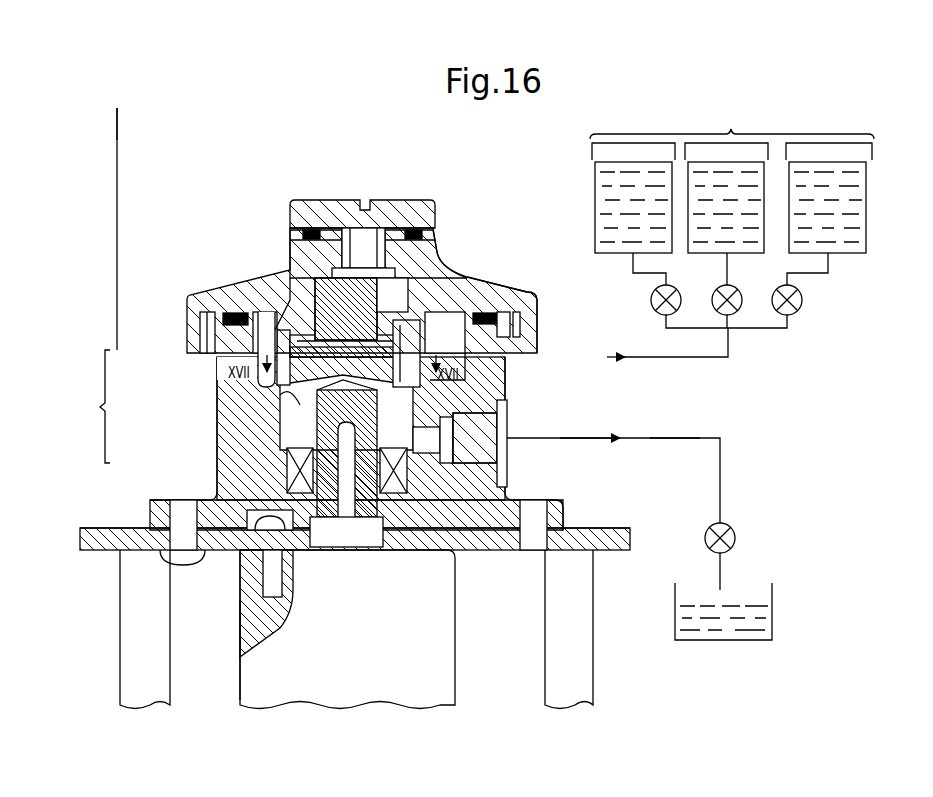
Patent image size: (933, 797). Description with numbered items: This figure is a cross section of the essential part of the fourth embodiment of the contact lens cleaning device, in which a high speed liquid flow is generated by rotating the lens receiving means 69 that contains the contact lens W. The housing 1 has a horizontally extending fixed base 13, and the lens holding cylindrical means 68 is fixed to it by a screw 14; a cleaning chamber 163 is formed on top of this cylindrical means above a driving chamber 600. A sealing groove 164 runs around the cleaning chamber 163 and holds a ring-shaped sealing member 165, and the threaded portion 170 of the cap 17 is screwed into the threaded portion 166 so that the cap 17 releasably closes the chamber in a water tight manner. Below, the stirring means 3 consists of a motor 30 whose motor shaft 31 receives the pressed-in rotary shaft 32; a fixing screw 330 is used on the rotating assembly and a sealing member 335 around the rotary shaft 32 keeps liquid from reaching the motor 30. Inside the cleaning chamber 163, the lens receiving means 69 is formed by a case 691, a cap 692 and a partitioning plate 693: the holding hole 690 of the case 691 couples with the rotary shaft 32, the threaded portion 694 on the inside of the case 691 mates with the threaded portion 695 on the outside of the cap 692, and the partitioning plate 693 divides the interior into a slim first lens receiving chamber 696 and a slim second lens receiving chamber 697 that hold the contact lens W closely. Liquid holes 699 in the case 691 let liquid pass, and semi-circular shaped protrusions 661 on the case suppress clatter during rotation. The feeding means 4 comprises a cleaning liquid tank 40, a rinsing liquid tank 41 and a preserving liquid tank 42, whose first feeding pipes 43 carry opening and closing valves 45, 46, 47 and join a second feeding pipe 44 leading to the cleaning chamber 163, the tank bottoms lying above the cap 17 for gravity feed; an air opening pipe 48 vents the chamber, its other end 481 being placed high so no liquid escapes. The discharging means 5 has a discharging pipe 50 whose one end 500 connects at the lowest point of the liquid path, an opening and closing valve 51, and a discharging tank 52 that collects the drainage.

The housing 1 is at (83, 552).
The fixed base 13 is at (118, 546).
The screw 14 is at (187, 560).
The stirring means 3 is at (452, 612).
The motor 30 is at (250, 675).
The fixing screw 330 is at (272, 597).
The sealing member 335 is at (303, 490).
The motor shaft 31 is at (347, 518).
The rotary shaft 32 is at (367, 512).
The lens holding cylindrical means 68 is at (316, 440).
The lens receiving means 69 is at (320, 398).
The holding hole 690 is at (287, 437).
The case 691 is at (290, 408).
The second lens receiving chamber 697 is at (307, 410).
The liquid holes 699 is at (217, 357).
The cap 17 is at (199, 300).
The sealing groove 164 is at (497, 290).
The sealing member 165 is at (237, 314).
The threaded portion 166 is at (205, 318).
The threaded portion 170 is at (205, 328).
The cleaning chamber 163 is at (465, 383).
The driving chamber 600 is at (470, 418).
The semi-circular shaped protrusions 661 is at (413, 317).
The cap 692 is at (352, 290).
The partitioning plate 693 is at (325, 320).
The threaded portion 694 is at (300, 280).
The threaded portion 695 is at (267, 320).
The first lens receiving chamber 696 is at (300, 330).
The contact lens W is at (345, 290).
The air opening pipe 48 is at (117, 182).
The other end of the air opening pipe 481 is at (117, 113).
The feeding means 4 is at (732, 120).
The cleaning liquid tank 40 is at (595, 192).
The rinsing liquid tank 41 is at (767, 245).
The preserving liquid tank 42 is at (868, 245).
The first feeding pipes 43 is at (668, 274).
The second feeding pipe 44 is at (683, 358).
The opening and closing valve 45 is at (653, 312).
The opening and closing valve 46 is at (738, 310).
The opening and closing valve 47 is at (797, 312).
The one end of the discharging pipe 500 is at (508, 438).
The discharging pipe 50 is at (594, 440).
The discharging means 5 is at (665, 440).
The opening and closing valve 51 is at (733, 530).
The discharging tank 52 is at (773, 590).